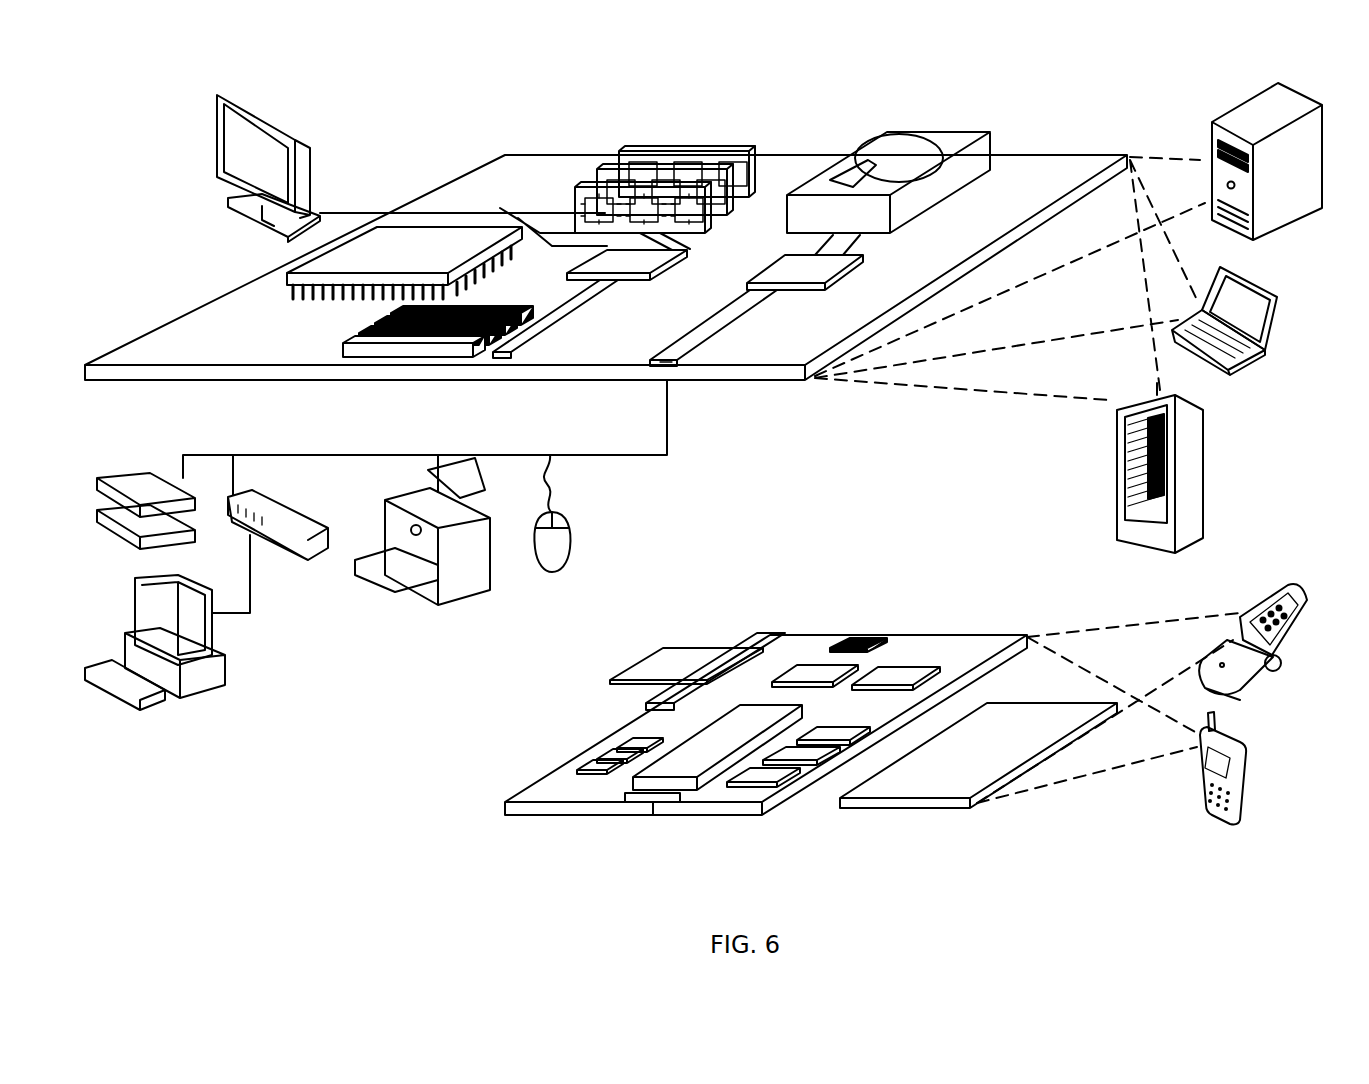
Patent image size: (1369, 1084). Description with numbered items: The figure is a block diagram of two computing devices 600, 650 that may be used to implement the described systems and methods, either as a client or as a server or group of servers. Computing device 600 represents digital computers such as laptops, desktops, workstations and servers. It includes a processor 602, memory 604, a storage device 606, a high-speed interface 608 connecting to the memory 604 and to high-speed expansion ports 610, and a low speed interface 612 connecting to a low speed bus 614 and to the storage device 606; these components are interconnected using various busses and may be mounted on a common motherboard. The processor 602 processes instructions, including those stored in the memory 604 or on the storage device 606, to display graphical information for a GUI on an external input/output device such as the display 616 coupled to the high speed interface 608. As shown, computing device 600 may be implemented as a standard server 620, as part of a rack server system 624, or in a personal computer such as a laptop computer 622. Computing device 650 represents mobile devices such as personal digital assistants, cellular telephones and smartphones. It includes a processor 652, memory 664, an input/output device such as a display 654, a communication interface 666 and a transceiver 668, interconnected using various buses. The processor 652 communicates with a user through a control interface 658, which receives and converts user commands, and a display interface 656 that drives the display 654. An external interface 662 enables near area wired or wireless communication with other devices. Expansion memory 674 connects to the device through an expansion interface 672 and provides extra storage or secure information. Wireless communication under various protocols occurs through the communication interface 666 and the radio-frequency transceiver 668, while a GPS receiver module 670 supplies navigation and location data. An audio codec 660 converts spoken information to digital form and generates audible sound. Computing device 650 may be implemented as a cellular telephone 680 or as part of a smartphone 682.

The computing device 600 is at (419, 114).
The processor 602 is at (287, 278).
The memory 604 is at (633, 152).
The storage device 606 is at (880, 137).
The high-speed interface 608 is at (600, 255).
The high-speed expansion ports 610 is at (357, 337).
The low speed interface 612 is at (787, 258).
The low speed bus 614 is at (677, 365).
The display 616 is at (222, 97).
The standard server 620 is at (1212, 141).
The laptop computer 622 is at (1278, 292).
The rack server system 624 is at (1117, 500).
The computing device 650 is at (481, 829).
The processor 652 is at (688, 772).
The display 654 is at (950, 787).
The display interface 656 is at (760, 787).
The control interface 658 is at (800, 757).
The audio codec 660 is at (823, 735).
The external interface 662 is at (655, 795).
The memory 664 is at (600, 770).
The communication interface 666 is at (815, 680).
The transceiver 668 is at (897, 680).
The GPS receiver module 670 is at (865, 640).
The expansion interface 672 is at (740, 640).
The expansion memory 674 is at (660, 653).
The cellular telephone 680 is at (1260, 590).
The smartphone 682 is at (1198, 783).